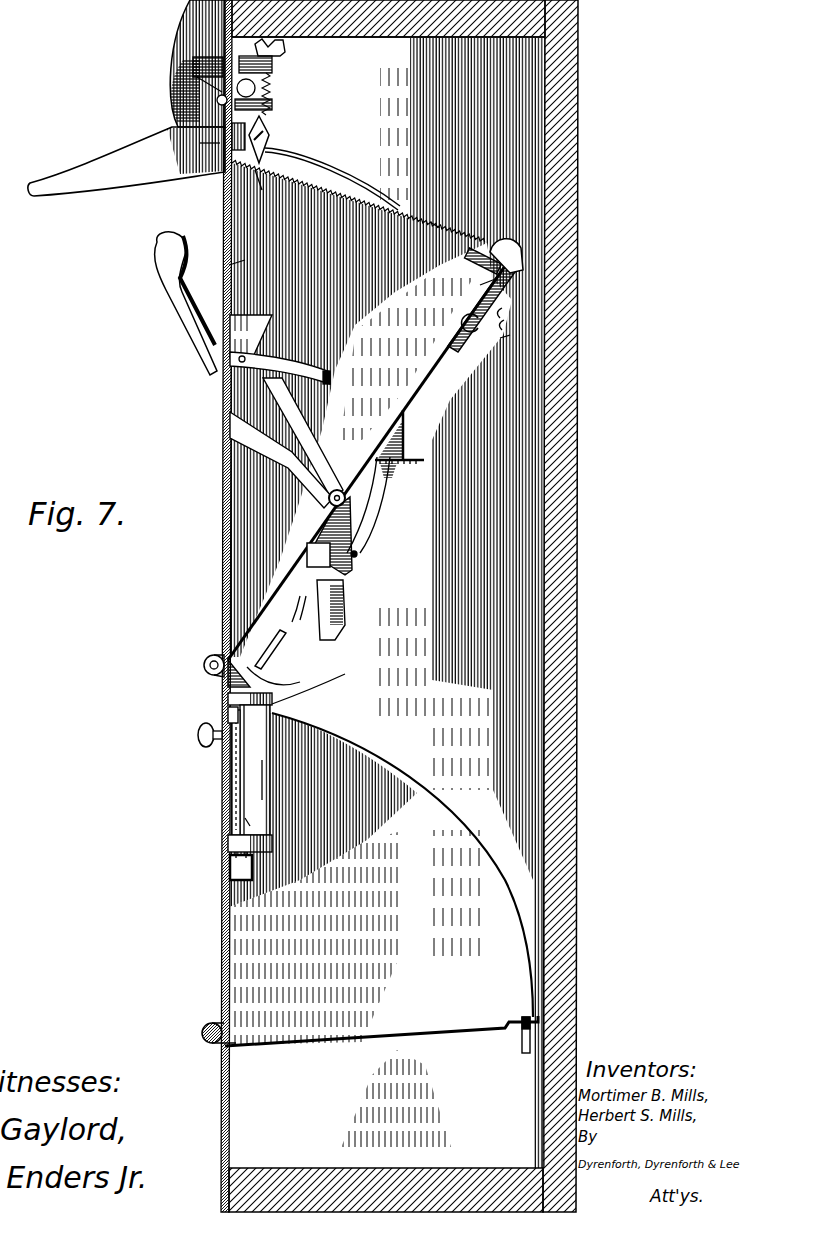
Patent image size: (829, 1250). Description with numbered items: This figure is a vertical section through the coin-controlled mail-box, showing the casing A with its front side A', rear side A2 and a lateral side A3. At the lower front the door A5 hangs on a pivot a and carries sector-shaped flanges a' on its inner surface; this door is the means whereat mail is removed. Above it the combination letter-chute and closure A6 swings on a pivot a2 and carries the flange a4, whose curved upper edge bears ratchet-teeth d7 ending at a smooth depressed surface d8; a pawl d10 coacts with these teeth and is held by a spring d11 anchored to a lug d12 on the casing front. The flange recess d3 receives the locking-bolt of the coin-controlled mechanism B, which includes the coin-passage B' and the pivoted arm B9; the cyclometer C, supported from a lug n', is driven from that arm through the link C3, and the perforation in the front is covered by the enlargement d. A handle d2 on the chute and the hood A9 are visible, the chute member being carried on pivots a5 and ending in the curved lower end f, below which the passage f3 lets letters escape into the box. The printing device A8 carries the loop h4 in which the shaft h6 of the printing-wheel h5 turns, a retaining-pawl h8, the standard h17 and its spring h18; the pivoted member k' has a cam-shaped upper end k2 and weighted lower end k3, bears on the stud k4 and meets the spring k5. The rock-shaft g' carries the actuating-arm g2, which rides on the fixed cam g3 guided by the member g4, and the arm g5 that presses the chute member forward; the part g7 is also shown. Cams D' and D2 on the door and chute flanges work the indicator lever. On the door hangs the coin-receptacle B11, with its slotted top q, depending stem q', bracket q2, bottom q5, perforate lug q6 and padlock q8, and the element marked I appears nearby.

The casing A is at (421, 318).
The rear side A2 is at (578, 502).
The lateral side A3 is at (428, 560).
The door A5 is at (221, 918).
The combination letter-chute and closure A6 is at (250, 254).
The printing or numbering device A8 is at (480, 285).
The hood A9 is at (132, 155).
The front side A' is at (386, 1145).
The pivot a is at (355, 1024).
The sector-shaped flange a' is at (381, 931).
The pivot a2 is at (203, 664).
The sector-shaped flange a4 is at (371, 456).
The pivot a5 is at (358, 408).
The coin-controlled mechanism B is at (161, 91).
The introductory slot or coin-passage B' is at (187, 63).
The pivoted arm B9 is at (276, 84).
The coin-receptacle B11 is at (248, 778).
The cyclometer or counting device C is at (273, 104).
The link C3 is at (255, 60).
The cam D' is at (494, 1040).
The cam D2 is at (466, 256).
The enlargement d is at (170, 105).
The handle d2 is at (180, 300).
The recess d3 is at (195, 144).
The ratchet-teeth d7 is at (425, 210).
The smooth depressed surface d8 is at (265, 190).
The pawl d10 is at (270, 125).
The spring d11 is at (272, 83).
The lug d12 is at (282, 50).
The curved lower end f is at (268, 650).
The passage f3 is at (279, 680).
The rock-shaft g' is at (293, 493).
The actuating-arm g2 is at (296, 430).
The fixed cam g3 is at (250, 322).
The guide and stop member g4 is at (288, 360).
The arm g5 is at (358, 554).
The rod g7 is at (262, 790).
The loop h4 is at (338, 612).
The printing-wheel h5 is at (302, 615).
The shaft h6 is at (307, 552).
The retaining-pawl h8 is at (385, 484).
The standard h17 is at (416, 454).
The spring h18 is at (411, 444).
The block I is at (202, 71).
The member k' is at (492, 316).
The cam-shaped upper end k2 is at (505, 246).
The weighted lower end k3 is at (507, 349).
The stud k4 is at (478, 305).
The spring k5 is at (326, 160).
The lug n' is at (212, 110).
The top q is at (314, 681).
The depending stem q' is at (201, 772).
The bracket q2 is at (228, 712).
The bottom q5 is at (272, 840).
The perforate lug q6 is at (250, 822).
The padlock q8 is at (230, 868).